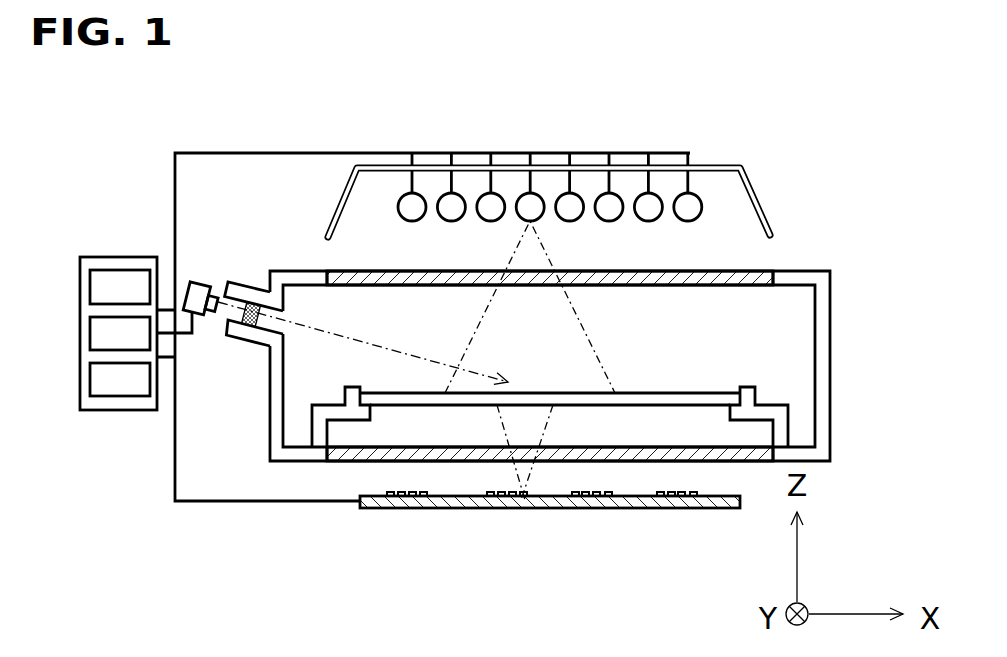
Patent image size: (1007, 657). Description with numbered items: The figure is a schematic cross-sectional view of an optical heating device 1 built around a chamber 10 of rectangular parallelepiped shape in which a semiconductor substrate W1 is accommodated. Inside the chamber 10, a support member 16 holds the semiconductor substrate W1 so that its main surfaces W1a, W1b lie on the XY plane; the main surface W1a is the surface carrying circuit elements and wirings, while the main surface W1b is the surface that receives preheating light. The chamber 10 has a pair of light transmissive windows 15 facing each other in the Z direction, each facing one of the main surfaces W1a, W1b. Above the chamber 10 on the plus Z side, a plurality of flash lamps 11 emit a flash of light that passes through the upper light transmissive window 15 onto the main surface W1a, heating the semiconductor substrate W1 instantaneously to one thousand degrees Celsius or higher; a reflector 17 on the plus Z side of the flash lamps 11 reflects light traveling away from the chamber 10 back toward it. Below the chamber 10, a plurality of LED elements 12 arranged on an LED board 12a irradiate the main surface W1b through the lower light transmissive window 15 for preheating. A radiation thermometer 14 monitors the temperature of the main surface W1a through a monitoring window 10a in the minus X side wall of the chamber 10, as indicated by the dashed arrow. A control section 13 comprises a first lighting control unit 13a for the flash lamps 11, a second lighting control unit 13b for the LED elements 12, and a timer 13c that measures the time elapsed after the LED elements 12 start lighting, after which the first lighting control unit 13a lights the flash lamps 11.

The optical heating device 1 is at (132, 160).
The chamber 10 is at (240, 458).
The monitoring window 10a is at (245, 336).
The flash lamps 11 is at (405, 195).
The LED elements 12 is at (523, 507).
The LED board 12a is at (552, 504).
The control section 13 is at (85, 305).
The first lighting control unit 13a is at (133, 345).
The second lighting control unit 13b is at (120, 288).
The timer 13c is at (92, 397).
The radiation thermometer 14 is at (194, 291).
The light transmissive windows 15 is at (710, 272).
The support member 16 is at (757, 408).
The reflector 17 is at (337, 210).
The semiconductor substrate W1 is at (633, 405).
The main surface W1a is at (718, 393).
The main surface W1b is at (397, 405).